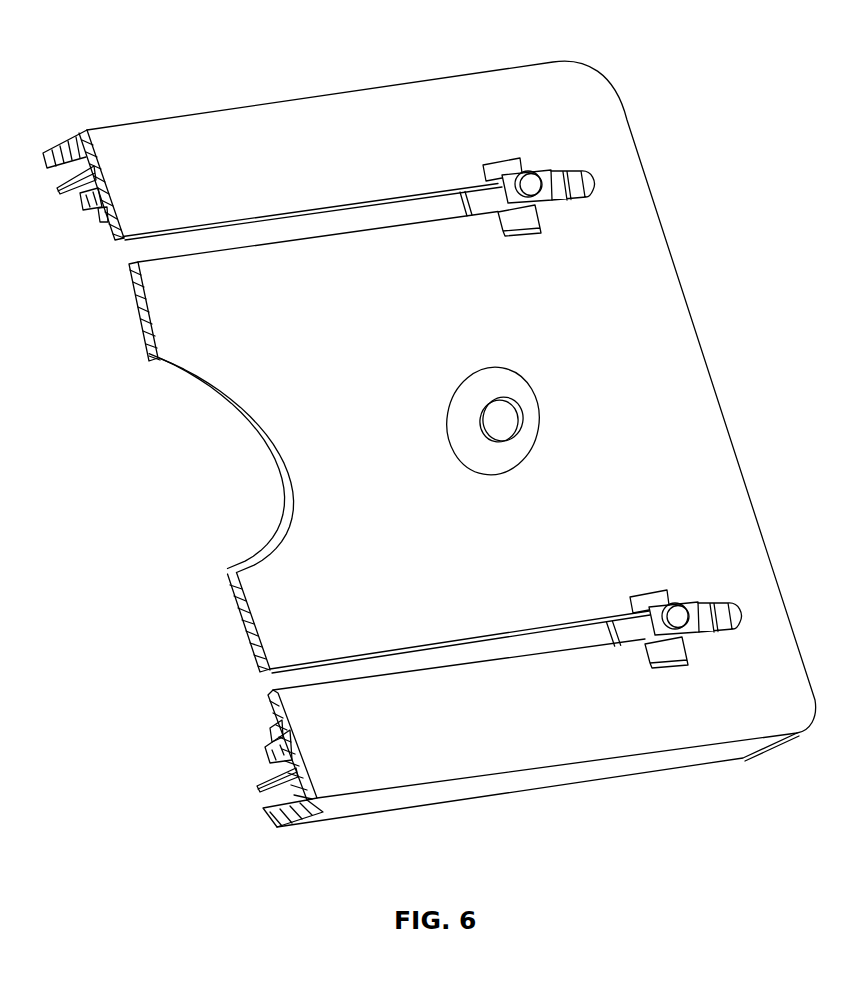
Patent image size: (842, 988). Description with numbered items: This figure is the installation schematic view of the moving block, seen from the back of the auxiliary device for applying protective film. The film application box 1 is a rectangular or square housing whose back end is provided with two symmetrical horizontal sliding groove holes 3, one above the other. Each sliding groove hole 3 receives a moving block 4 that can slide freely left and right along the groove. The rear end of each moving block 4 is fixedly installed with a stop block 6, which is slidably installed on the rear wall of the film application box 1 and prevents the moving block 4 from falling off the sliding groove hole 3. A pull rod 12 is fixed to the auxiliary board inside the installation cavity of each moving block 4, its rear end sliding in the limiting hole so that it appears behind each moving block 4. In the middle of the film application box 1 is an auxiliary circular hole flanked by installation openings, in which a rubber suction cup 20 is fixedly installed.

The film application box 1 is at (707, 420).
The sliding groove hole 3 is at (381, 192).
The moving block 4 is at (483, 185).
The stop block 6 is at (502, 154).
The pull rod 12 is at (537, 166).
The suction cup 20 is at (541, 421).